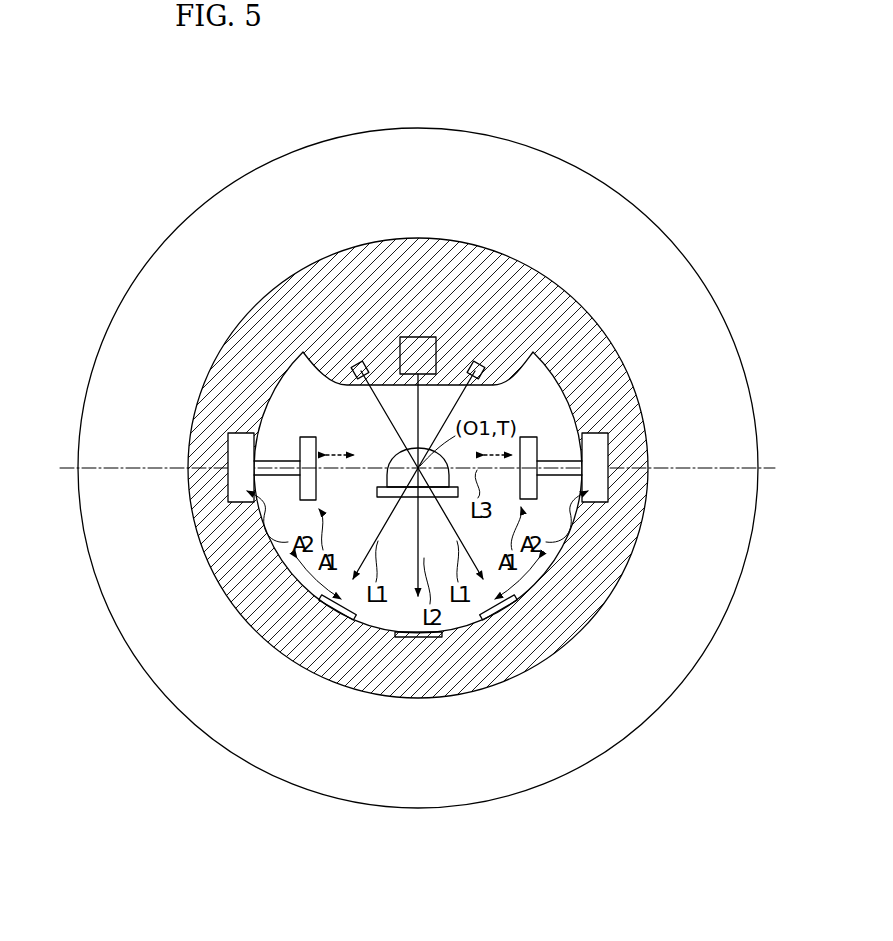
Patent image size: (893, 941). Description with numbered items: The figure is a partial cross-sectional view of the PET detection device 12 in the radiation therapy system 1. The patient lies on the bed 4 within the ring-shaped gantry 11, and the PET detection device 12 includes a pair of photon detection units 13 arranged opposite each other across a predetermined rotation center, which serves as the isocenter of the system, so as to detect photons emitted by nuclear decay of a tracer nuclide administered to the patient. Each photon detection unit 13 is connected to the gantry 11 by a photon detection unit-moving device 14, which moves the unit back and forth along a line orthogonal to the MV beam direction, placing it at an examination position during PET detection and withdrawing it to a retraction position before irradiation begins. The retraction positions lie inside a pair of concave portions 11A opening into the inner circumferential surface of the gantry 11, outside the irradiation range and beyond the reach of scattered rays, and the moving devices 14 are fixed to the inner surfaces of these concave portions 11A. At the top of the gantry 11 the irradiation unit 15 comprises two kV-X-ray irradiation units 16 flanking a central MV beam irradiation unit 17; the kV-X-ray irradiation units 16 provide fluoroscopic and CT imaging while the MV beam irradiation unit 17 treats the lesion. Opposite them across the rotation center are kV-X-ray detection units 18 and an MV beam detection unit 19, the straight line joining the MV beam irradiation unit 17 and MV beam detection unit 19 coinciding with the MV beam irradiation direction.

The radiation therapy system 1 is at (640, 104).
The gantry 11 is at (577, 312).
The concave portions 11A is at (228, 500).
The PET detection device 12 is at (286, 430).
The photon detection units 13 is at (308, 440).
The photon detection unit-moving devices 14 is at (293, 477).
The irradiation unit 15 is at (434, 205).
The kV-X-ray irradiation units 16 is at (362, 362).
The MV beam irradiation unit 17 is at (418, 350).
The kV-X-ray detection units 18 is at (336, 618).
The MV beam detection unit 19 is at (422, 638).
The bed 4 is at (378, 493).